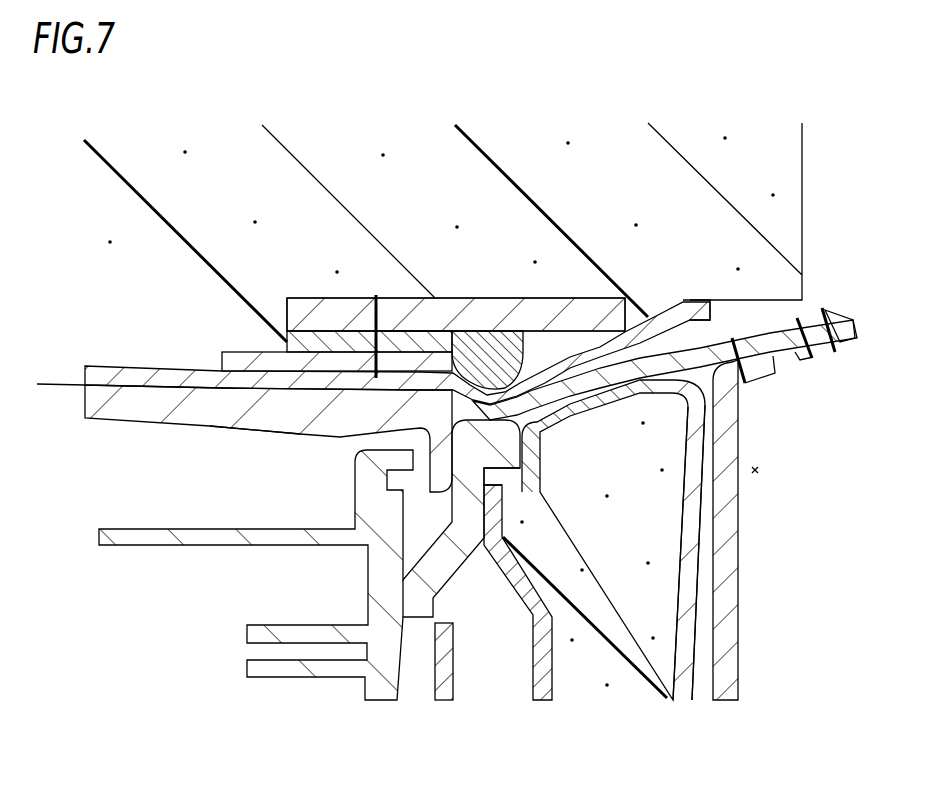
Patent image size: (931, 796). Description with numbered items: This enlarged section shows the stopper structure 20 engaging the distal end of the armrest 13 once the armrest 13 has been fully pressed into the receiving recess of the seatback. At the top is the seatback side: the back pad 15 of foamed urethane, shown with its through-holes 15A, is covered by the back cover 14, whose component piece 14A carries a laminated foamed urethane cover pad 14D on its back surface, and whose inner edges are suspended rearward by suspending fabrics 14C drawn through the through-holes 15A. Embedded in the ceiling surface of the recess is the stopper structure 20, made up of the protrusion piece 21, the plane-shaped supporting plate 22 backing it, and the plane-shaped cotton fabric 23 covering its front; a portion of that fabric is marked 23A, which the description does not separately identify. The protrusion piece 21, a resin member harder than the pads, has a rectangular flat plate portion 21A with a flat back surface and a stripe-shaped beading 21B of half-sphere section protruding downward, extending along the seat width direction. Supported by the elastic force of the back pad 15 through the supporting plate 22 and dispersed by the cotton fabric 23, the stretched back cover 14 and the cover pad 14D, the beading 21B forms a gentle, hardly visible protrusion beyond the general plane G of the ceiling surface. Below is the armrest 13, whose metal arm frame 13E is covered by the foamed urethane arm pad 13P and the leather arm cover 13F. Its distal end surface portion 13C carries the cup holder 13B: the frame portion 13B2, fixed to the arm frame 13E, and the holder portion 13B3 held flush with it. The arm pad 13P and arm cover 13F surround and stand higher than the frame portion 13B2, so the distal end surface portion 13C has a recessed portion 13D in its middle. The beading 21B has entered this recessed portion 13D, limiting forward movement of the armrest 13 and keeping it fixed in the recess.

The armrest 13 is at (105, 466).
The cup holder 13B is at (204, 396).
The frame portion 13B2 is at (493, 450).
The holder portion 13B3 is at (285, 413).
The distal end surface portion 13C is at (662, 335).
The recessed portion 13D is at (520, 425).
The arm frame 13E is at (455, 660).
The arm cover 13F is at (690, 533).
The arm pad 13P is at (615, 612).
The back cover 14 is at (752, 428).
The component piece 14A is at (726, 608).
The cover pad 14D is at (158, 378).
The suspending fabrics 14C is at (843, 338).
The back pad 15 is at (465, 157).
The through-holes 15A is at (755, 470).
The stopper structure 20 is at (584, 284).
The protrusion piece 21 is at (331, 333).
The flat plate portion 21A is at (415, 325).
The beading 21B is at (488, 340).
The supporting plate 22 is at (357, 286).
The cotton fabric 23 is at (252, 336).
The layer edge 23A is at (376, 292).
The general plane G is at (53, 383).